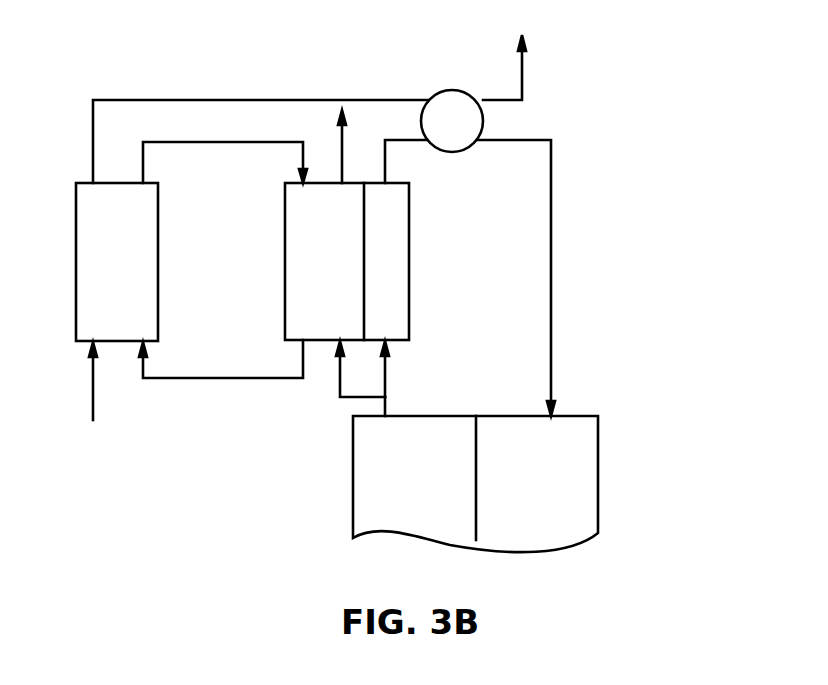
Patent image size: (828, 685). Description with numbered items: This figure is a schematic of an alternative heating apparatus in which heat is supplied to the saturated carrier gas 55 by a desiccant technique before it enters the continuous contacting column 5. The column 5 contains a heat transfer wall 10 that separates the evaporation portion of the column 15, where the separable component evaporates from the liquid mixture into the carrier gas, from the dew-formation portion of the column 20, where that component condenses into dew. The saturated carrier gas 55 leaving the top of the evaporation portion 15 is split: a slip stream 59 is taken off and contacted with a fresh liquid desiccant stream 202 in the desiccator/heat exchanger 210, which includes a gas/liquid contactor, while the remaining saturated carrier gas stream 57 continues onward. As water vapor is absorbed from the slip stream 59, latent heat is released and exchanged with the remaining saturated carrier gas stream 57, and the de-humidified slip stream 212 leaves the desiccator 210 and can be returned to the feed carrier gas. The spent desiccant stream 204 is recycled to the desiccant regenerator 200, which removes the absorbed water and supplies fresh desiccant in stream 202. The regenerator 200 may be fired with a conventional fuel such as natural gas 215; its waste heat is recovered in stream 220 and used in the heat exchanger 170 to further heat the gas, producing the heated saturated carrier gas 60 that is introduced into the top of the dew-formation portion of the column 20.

The continuous contacting column 5 is at (528, 508).
The heat transfer wall 10 is at (476, 508).
The evaporation portion of the column 15 is at (428, 491).
The dew-formation portion of the column 20 is at (548, 491).
The saturated carrier gas 55 is at (386, 404).
The remaining saturated carrier gas stream 57 is at (386, 373).
The slip stream 59 is at (339, 384).
The heated saturated carrier gas 60 is at (552, 290).
The heat exchanger 170 is at (438, 76).
The desiccant regenerator 200 is at (139, 281).
The fresh liquid desiccant stream 202 is at (209, 143).
The spent desiccant stream 204 is at (232, 377).
The desiccator/heat exchanger 210 is at (350, 281).
The de-humidified slip stream 212 is at (336, 135).
The natural gas 215 is at (95, 395).
The waste heat stream 220 is at (220, 99).